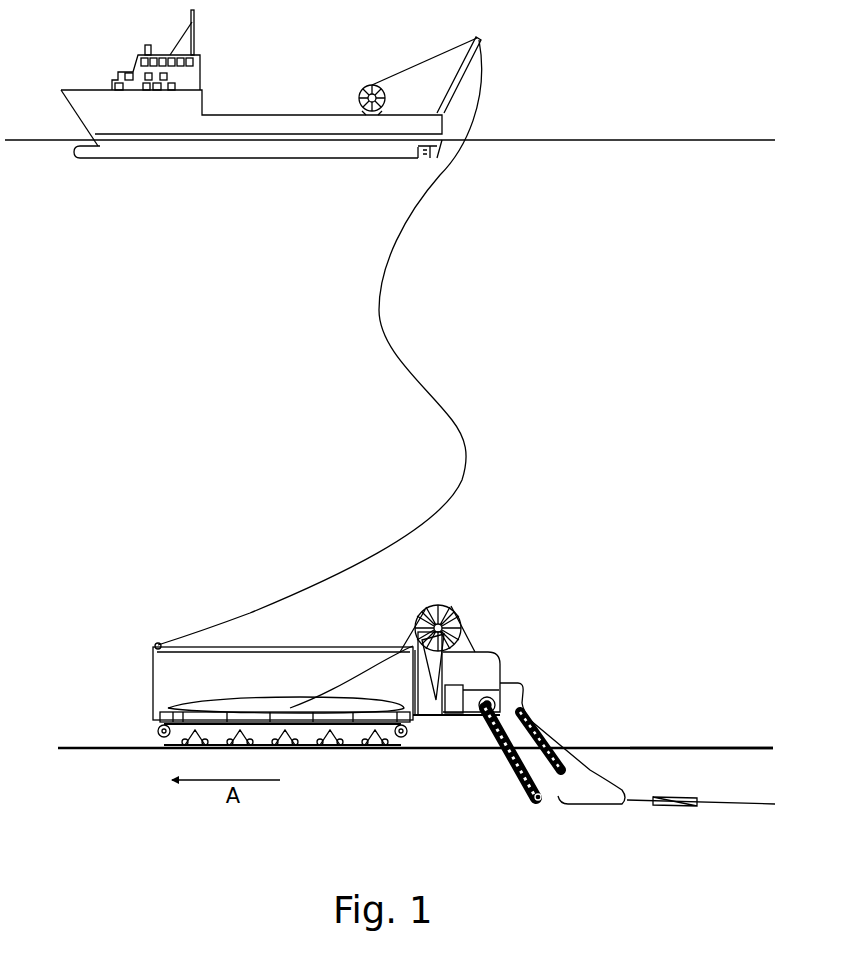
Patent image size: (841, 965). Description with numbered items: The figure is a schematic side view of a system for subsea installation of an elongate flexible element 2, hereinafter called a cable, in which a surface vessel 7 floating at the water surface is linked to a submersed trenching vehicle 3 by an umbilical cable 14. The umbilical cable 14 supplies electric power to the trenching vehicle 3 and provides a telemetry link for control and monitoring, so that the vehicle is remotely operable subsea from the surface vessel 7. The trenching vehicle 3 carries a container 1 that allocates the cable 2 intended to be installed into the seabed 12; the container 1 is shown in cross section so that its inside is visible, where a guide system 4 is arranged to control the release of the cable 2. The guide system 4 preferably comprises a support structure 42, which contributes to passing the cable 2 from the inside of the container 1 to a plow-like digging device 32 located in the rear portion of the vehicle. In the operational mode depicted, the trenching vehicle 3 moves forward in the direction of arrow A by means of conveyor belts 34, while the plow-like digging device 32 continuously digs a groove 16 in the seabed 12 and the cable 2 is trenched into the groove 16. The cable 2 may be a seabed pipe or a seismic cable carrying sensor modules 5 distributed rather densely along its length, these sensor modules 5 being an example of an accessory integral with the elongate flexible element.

The surface vessel 7 is at (318, 70).
The umbilical cable 14 is at (380, 322).
The container 1 is at (395, 674).
The guide system 4 is at (268, 662).
The support structure 42 is at (440, 606).
The trenching vehicle 3 is at (500, 648).
The conveyor belts 34 is at (340, 748).
The seabed 12 is at (103, 746).
The plow-like digging device 32 is at (593, 770).
The groove 16 is at (628, 758).
The elongate flexible element 2 is at (645, 806).
The sensor modules 5 is at (675, 806).